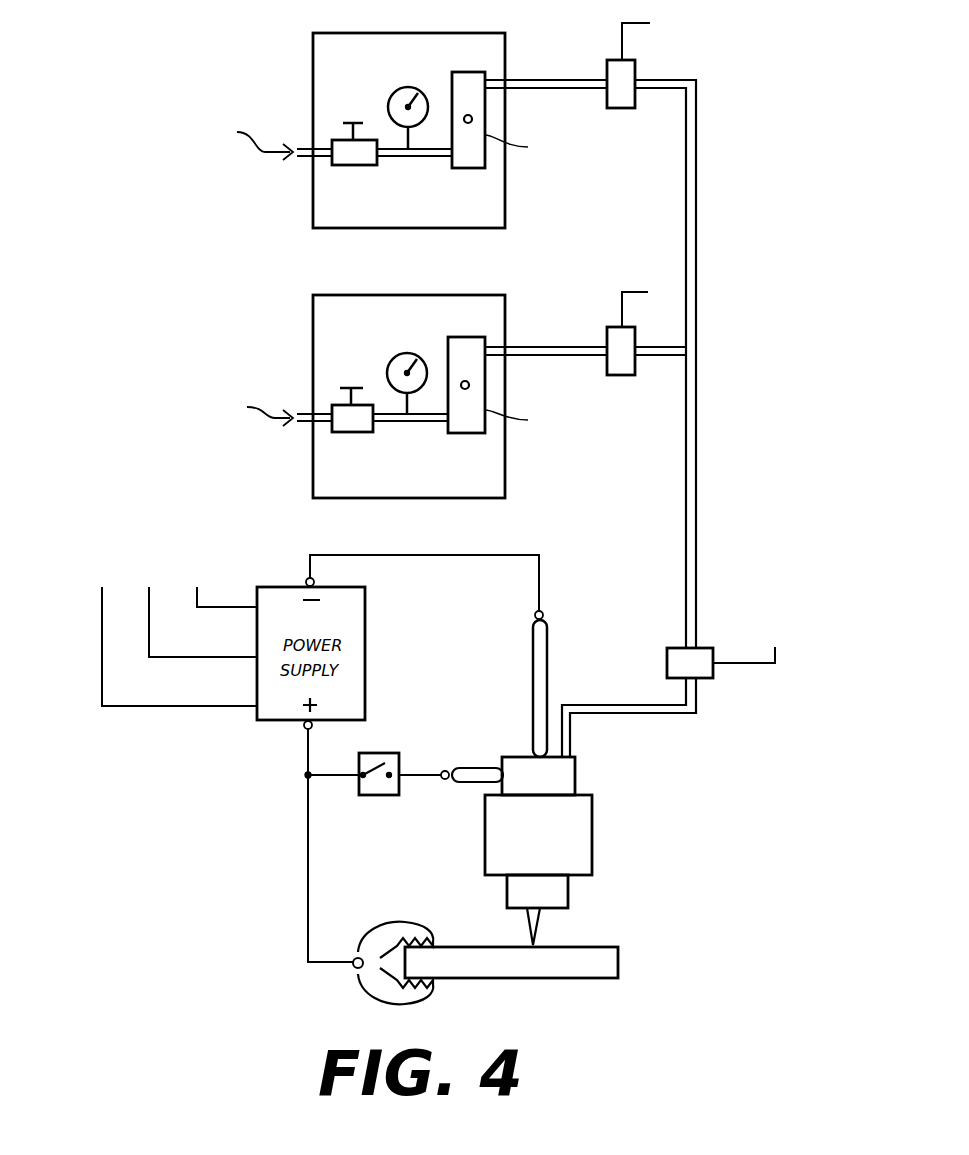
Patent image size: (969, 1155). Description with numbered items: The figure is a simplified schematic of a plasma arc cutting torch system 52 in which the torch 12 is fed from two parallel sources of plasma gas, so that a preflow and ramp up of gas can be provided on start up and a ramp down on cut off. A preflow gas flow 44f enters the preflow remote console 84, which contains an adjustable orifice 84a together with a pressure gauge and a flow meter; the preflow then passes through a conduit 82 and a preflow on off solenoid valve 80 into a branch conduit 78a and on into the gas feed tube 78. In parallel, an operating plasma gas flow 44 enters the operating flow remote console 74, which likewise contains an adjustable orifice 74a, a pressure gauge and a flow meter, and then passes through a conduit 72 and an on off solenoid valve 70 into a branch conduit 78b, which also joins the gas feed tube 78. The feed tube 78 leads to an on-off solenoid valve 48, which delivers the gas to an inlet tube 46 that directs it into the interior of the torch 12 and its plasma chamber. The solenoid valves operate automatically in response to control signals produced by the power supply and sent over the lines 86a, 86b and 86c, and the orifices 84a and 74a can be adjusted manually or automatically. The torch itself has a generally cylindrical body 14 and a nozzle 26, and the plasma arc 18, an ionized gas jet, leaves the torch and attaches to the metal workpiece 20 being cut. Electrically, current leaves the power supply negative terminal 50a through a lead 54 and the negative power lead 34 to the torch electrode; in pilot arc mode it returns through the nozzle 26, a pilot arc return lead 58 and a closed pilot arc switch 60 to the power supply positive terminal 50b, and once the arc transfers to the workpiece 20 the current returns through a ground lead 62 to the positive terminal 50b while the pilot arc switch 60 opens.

The preflow remote console 84 is at (505, 207).
The orifice 84a is at (350, 131).
The preflow gas flow 44f is at (245, 142).
The conduit 82 is at (525, 80).
The preflow on off solenoid valve 80 is at (632, 67).
The line 86c is at (102, 690).
The branch conduit 78a is at (697, 78).
The torch system 52 is at (697, 105).
The operating flow remote console 74 is at (505, 478).
The orifice 74a is at (348, 396).
The operating plasma gas flow 44 is at (247, 412).
The conduit 72 is at (530, 346).
The on off solenoid valve 70 is at (617, 330).
The line 86b is at (149, 645).
The branch conduit 78b is at (662, 343).
The gas feed tube 78 is at (697, 415).
The on-off solenoid valve 48 is at (713, 648).
The line 86a is at (778, 660).
The inlet tube 46 is at (683, 713).
The power supply negative terminal 50a is at (308, 578).
The power supply positive terminal 50b is at (306, 730).
The lead 54 is at (410, 555).
The negative power lead 34 is at (547, 628).
The ground lead 62 is at (308, 863).
The pilot arc return lead 58 is at (417, 775).
The pilot arc switch 60 is at (357, 790).
The plasma arc cutting torch 12 is at (598, 793).
The body 14 is at (592, 845).
The nozzle 26 is at (568, 890).
The plasma arc 18 is at (540, 930).
The workpiece 20 is at (618, 962).